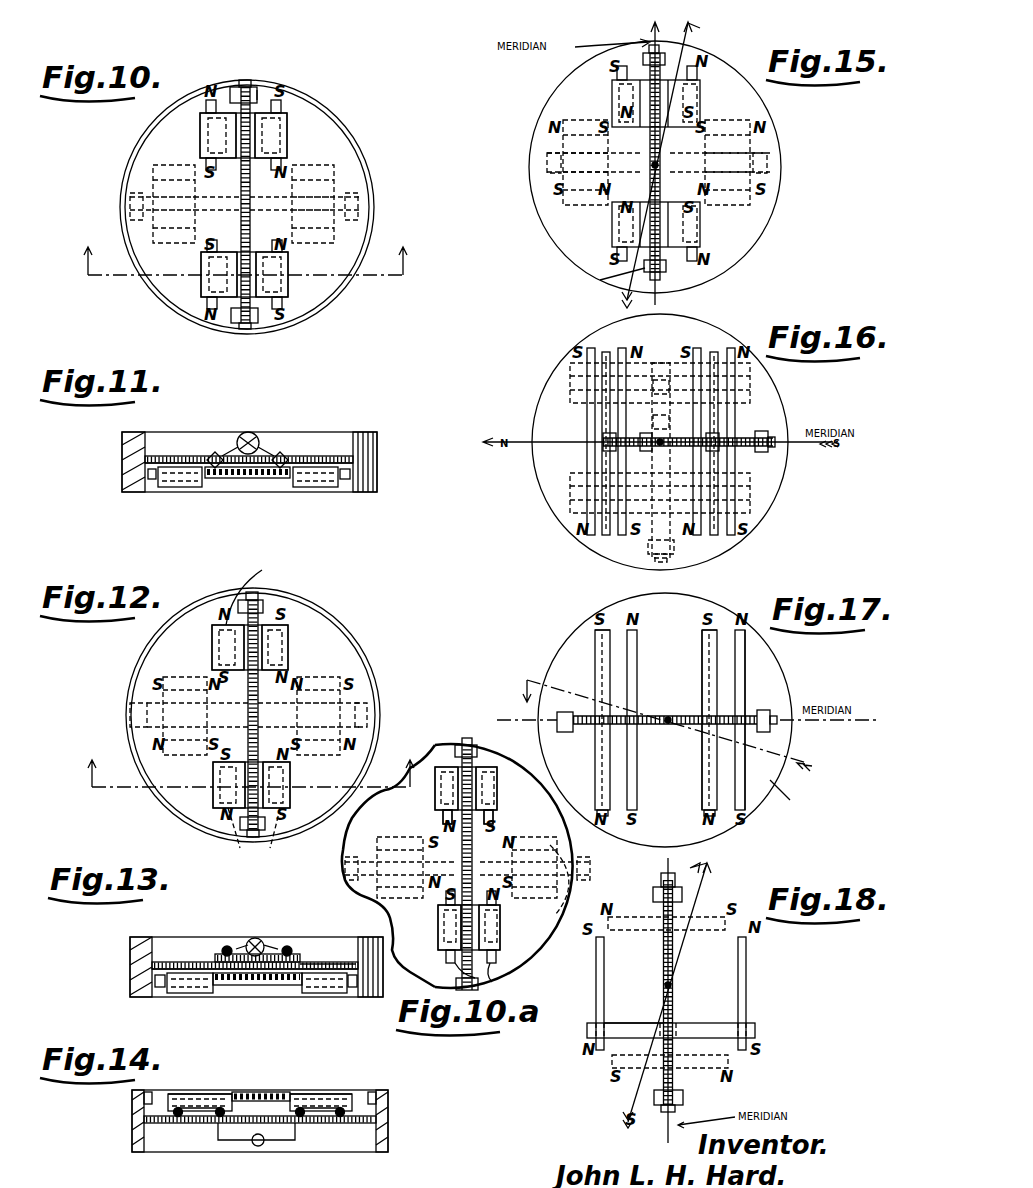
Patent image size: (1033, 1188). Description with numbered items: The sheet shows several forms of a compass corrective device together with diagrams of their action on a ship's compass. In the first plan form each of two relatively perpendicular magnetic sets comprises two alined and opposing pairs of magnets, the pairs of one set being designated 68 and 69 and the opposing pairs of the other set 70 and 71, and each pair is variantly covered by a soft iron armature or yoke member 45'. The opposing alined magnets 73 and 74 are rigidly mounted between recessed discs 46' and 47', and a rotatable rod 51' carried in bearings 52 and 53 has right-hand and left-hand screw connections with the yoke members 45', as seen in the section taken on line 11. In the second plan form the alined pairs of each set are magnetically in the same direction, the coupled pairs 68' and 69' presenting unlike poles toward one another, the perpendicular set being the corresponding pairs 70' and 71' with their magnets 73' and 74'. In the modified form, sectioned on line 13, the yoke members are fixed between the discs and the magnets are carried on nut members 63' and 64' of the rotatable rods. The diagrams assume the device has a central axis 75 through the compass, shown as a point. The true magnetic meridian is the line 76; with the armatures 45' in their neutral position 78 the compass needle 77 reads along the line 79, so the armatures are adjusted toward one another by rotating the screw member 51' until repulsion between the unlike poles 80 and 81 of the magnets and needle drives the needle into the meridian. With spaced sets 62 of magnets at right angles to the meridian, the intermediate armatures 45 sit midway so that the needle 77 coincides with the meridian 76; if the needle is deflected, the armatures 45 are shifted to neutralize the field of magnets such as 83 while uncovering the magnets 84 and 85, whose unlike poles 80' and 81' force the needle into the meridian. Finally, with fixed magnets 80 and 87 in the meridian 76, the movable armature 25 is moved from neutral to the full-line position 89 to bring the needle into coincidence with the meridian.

In FIG. 10, the section line 11 is at (96, 246).
In FIG. 12, the section line 13- 13 is at (100, 760).
In FIG. 18, the movable armature 25 is at (645, 1030).
In FIG. 16, the armatures 45 is at (669, 422).
In FIG. 17, the armatures 45 is at (681, 720).
In FIG. 10, the armature or yoke member 45' is at (260, 178).
In FIG. 11, the armature or yoke member 45' is at (258, 494).
In FIG. 13, the armature or yoke member 45' is at (336, 935).
In FIG. 15, the armature or yoke member 45' is at (653, 163).
In FIG. 11, the disc 46' is at (251, 432).
In FIG. 11, the disc 47' is at (234, 436).
In FIG. 10, the rotatable rod 51' is at (228, 205).
In FIG. 11, the rotatable rod 51' is at (249, 457).
In FIG. 12, the rotatable rod 51' is at (238, 715).
In FIG. 13, the rotatable rod 51' is at (261, 953).
In FIG. 14, the rotatable rod 51' is at (260, 1119).
In FIG. 15, the rotatable rod 51' is at (673, 162).
In FIG. 10, the bearing 52 is at (247, 80).
In FIG. 11, the bearing 52 is at (249, 432).
In FIG. 12, the bearing 52 is at (259, 601).
In FIG. 10A, the bearing 52 is at (468, 738).
In FIG. 17, the bearing 52 is at (514, 720).
In FIG. 10, the bearing 53 is at (258, 315).
In FIG. 12, the bearing 53 is at (368, 712).
In FIG. 14, the spaced sets of magnets 62 is at (178, 1107).
In FIG. 16, the spaced sets of magnets 62 is at (604, 413).
In FIG. 17, the spaced sets of magnets 62 is at (592, 642).
In FIG. 12, the nut member 63' is at (328, 737).
In FIG. 13, the nut member 63' is at (327, 955).
In FIG. 14, the nut member 63' is at (329, 1075).
In FIG. 12, the nut member 64' is at (236, 672).
In FIG. 13, the nut member 64' is at (184, 996).
In FIG. 14, the nut member 64' is at (203, 1075).
In FIG. 10, the pair of magnets 68 is at (298, 78).
In FIG. 12, the pair of magnets 68 is at (290, 590).
In FIG. 10A, the coupled pair of magnets 68' is at (468, 819).
In FIG. 10, the pair of magnets 69 is at (251, 329).
In FIG. 12, the pair of magnets 69 is at (255, 836).
In FIG. 10A, the coupled pair of magnets 69' is at (486, 974).
In FIG. 10, the opposing pair of magnets 70 is at (334, 204).
In FIG. 10A, the dotted magnet position 70' is at (535, 878).
In FIG. 10, the opposing pair of magnets 71 is at (157, 204).
In FIG. 10A, the dotted magnet position 71' is at (400, 886).
In FIG. 10, the alined magnet 73 is at (245, 206).
In FIG. 12, the alined magnet 73 is at (253, 716).
In FIG. 13, the alined magnet 73 is at (305, 929).
In FIG. 10A, the magnet half 73' is at (475, 861).
In FIG. 10, the alined magnet 74 is at (240, 231).
In FIG. 12, the alined magnet 74 is at (248, 716).
In FIG. 13, the alined magnet 74 is at (248, 931).
In FIG. 10A, the magnet half 74' is at (462, 865).
In FIG. 15, the central axis 75 is at (650, 172).
In FIG. 16, the central axis 75 is at (662, 438).
In FIG. 17, the central axis 75 is at (668, 717).
In FIG. 18, the central axis 75 is at (673, 985).
In FIG. 15, the true magnetic meridian 76 is at (648, 44).
In FIG. 16, the true magnetic meridian 76 is at (540, 448).
In FIG. 18, the true magnetic meridian 76 is at (666, 865).
In FIG. 15, the compass needle 77 is at (690, 40).
In FIG. 16, the compass needle 77 is at (540, 455).
In FIG. 17, the compass needle 77 is at (550, 690).
In FIG. 18, the compass needle 77 is at (710, 876).
In FIG. 15, the neutral position of armatures 78 is at (770, 178).
In FIG. 15, the deflected reading line 79 is at (600, 280).
In FIG. 17, the deflected reading line 79 is at (777, 785).
In FIG. 15, the magnet pole 80 is at (653, 163).
In FIG. 18, the magnet pole 80 is at (690, 992).
In FIG. 17, the magnet pole 80' is at (704, 719).
In FIG. 15, the compass needle pole 81 is at (678, 170).
In FIG. 18, the compass needle pole 81 is at (723, 861).
In FIG. 17, the compass needle pole 81' is at (665, 743).
In FIG. 17, the magnet 83 is at (700, 648).
In FIG. 17, the magnet 84 is at (610, 630).
In FIG. 17, the magnet 85 is at (745, 648).
In FIG. 18, the fixed magnet 87 is at (746, 985).
In FIG. 18, the armature full-line position 89 is at (718, 1030).